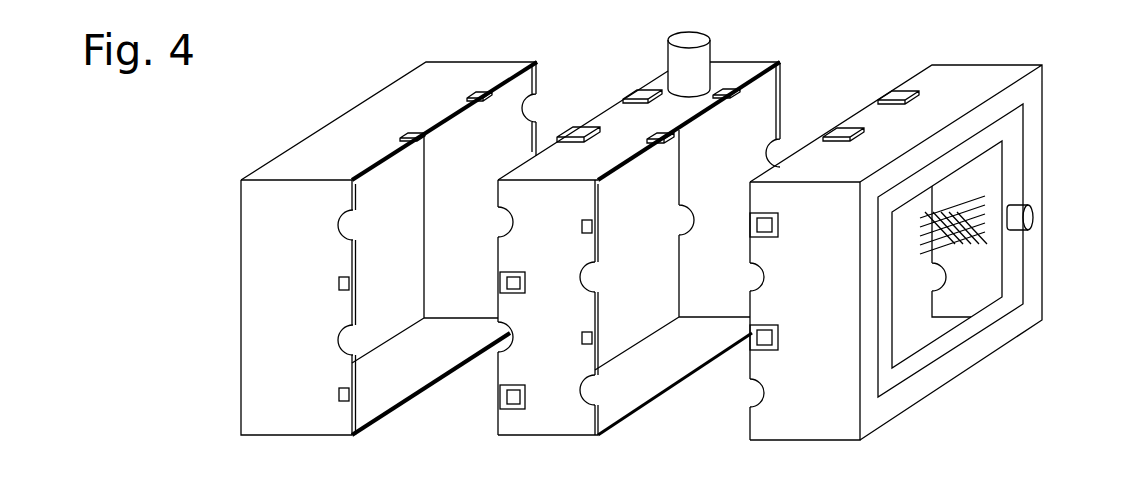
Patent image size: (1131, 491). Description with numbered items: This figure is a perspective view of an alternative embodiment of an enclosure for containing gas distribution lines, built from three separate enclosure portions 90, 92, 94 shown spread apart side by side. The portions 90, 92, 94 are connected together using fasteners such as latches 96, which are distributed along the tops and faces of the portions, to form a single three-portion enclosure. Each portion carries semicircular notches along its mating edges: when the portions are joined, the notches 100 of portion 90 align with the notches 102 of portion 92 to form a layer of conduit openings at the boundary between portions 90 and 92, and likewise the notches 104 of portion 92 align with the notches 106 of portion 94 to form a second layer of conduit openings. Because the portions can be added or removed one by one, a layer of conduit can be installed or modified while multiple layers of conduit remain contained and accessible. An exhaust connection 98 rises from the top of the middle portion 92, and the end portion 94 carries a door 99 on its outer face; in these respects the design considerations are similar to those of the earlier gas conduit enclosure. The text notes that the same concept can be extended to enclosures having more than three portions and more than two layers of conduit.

The enclosure portion 90 is at (250, 406).
The enclosure portion 92 is at (572, 425).
The enclosure portion 94 is at (786, 427).
The latches 96 is at (580, 128).
The exhaust connection 98 is at (697, 63).
The door 99 is at (1015, 298).
The notches 100 is at (342, 330).
The notches 102 is at (508, 337).
The notches 104 is at (587, 382).
The notches 106 is at (763, 380).